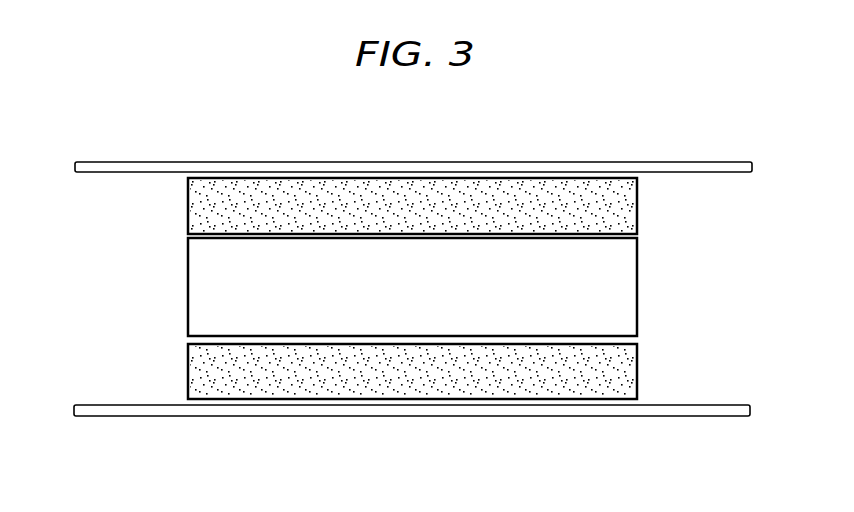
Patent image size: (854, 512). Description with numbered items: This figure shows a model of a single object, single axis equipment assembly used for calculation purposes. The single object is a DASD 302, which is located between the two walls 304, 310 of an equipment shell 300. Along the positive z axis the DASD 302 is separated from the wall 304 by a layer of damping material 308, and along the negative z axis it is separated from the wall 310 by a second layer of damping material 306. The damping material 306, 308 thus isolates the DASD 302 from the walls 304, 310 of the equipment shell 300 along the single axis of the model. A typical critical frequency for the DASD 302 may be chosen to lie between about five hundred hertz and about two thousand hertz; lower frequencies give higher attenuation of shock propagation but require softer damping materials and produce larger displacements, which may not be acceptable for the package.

The equipment shell 300 is at (588, 118).
The DASD 302 is at (188, 305).
The wall 304 is at (105, 162).
The damping material 306 is at (188, 377).
The damping material 308 is at (188, 215).
The wall 310 is at (103, 417).